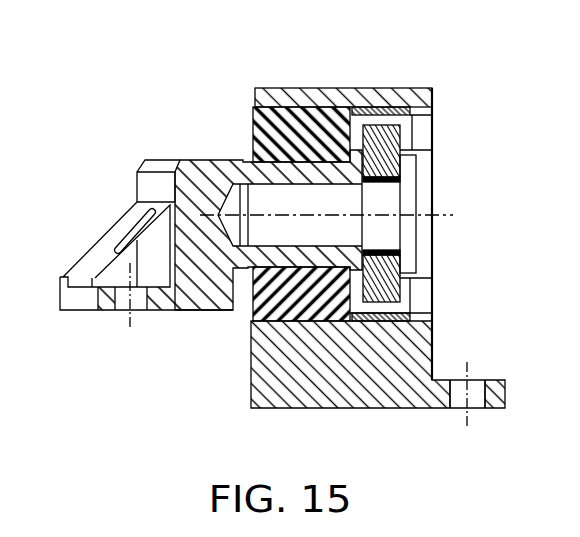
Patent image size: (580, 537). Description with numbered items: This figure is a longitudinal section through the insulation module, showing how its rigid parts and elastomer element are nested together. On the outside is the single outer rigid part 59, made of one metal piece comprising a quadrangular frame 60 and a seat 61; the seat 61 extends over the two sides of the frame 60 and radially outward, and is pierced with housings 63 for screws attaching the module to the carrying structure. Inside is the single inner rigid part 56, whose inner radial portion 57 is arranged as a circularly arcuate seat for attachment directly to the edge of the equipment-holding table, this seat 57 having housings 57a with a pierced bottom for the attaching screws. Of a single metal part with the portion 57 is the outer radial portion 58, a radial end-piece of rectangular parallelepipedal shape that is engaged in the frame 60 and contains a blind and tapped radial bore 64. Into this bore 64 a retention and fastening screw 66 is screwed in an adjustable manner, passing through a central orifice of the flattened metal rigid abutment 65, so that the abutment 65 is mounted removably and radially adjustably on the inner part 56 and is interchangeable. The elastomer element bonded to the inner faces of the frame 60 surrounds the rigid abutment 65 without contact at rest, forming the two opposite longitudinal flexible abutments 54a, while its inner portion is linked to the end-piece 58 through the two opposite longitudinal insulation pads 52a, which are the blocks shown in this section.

The longitudinal insulation pads 52a is at (278, 133).
The longitudinal flexible abutments 54a is at (383, 110).
The inner rigid part 56 is at (231, 143).
The inner radial portion 57 is at (193, 290).
The housings 57a is at (150, 248).
The outer radial portion 58 is at (252, 335).
The outer rigid part 59 is at (426, 79).
The quadrangular frame 60 is at (323, 97).
The seat 61 is at (505, 392).
The housings 63 is at (475, 398).
The blind and tapped radial bore 64 is at (240, 203).
The rigid abutment 65 is at (383, 150).
The retention and fastening screw 66 is at (407, 200).